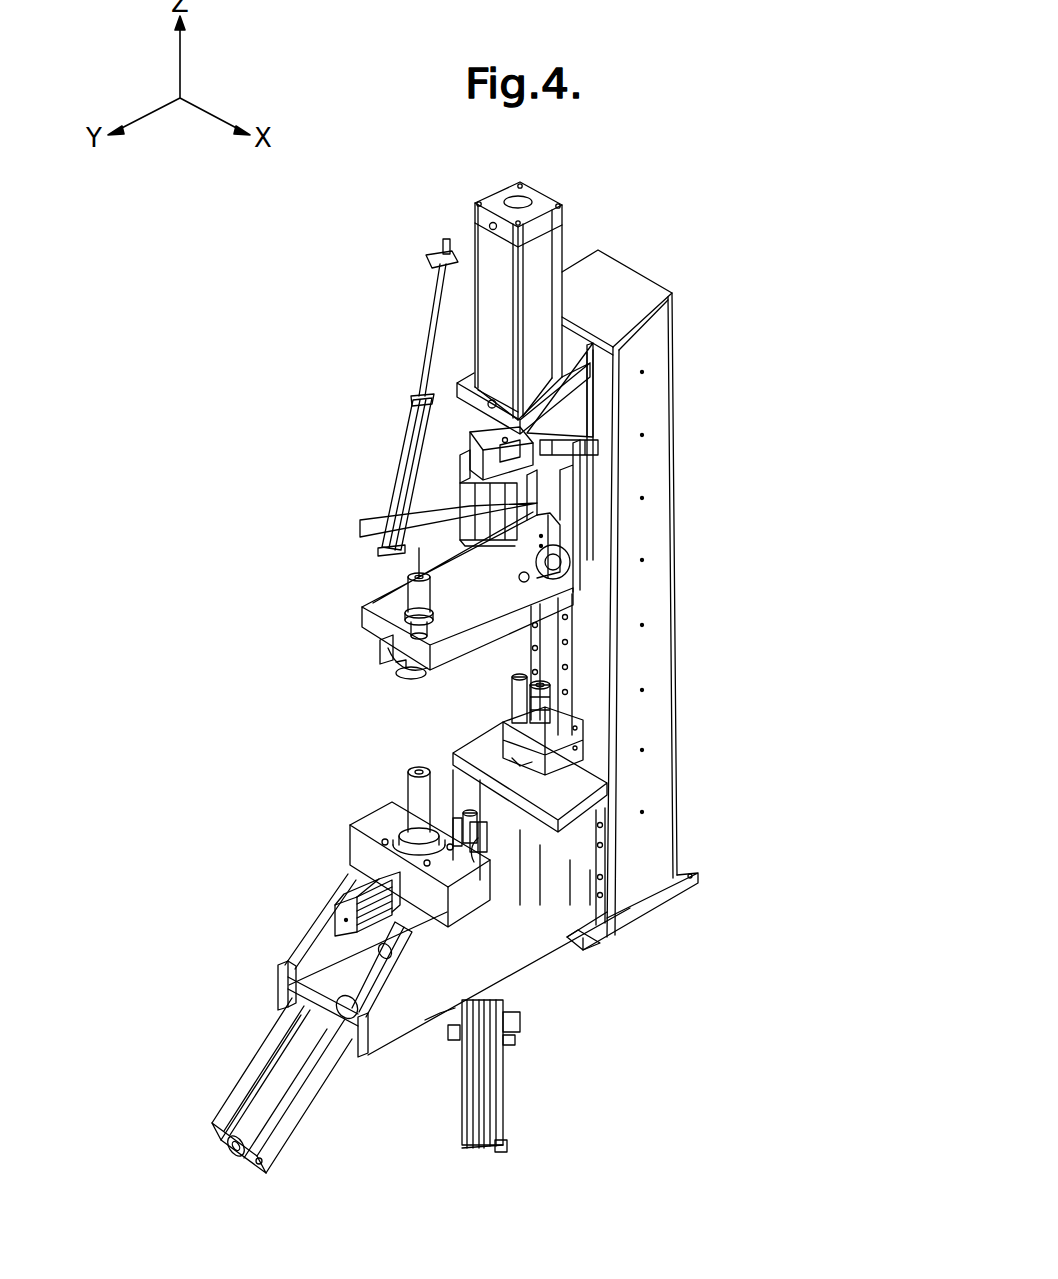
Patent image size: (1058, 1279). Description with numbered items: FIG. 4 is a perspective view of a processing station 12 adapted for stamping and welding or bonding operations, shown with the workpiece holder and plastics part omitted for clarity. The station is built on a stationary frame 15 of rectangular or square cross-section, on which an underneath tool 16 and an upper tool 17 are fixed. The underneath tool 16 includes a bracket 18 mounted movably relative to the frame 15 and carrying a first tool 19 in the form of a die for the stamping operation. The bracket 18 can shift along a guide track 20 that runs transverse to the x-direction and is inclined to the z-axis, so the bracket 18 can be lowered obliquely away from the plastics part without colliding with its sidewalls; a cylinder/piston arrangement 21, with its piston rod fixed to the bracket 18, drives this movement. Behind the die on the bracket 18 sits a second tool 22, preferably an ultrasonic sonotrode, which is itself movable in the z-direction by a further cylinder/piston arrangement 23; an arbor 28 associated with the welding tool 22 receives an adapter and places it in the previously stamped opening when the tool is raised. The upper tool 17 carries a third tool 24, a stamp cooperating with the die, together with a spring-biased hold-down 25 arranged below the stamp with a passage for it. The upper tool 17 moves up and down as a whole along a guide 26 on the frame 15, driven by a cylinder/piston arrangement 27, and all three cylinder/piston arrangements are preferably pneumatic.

The processing station 12 is at (390, 398).
The frame 15 is at (655, 658).
The underneath tool 16 is at (307, 920).
The upper tool 17 is at (583, 535).
The bracket 18 is at (466, 890).
The first tool 19 is at (418, 797).
The guide track 20 is at (283, 958).
The cylinder/piston arrangement 21 is at (321, 1100).
The second tool 22 is at (486, 840).
The cylinder/piston arrangement 23 is at (496, 1097).
The third tool 24 is at (420, 598).
The hold-down 25 is at (388, 668).
The guide 26 is at (585, 440).
The cylinder/piston arrangement 27 is at (548, 257).
The arbor 28 is at (476, 820).